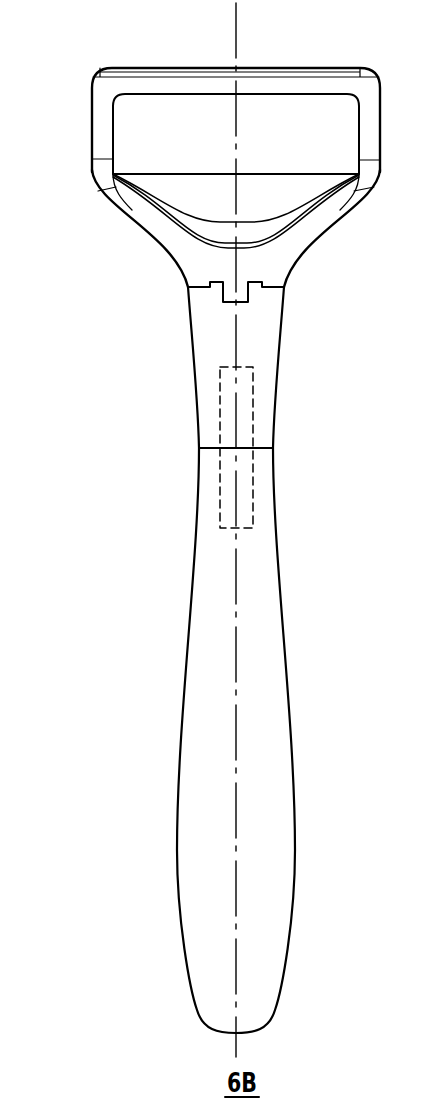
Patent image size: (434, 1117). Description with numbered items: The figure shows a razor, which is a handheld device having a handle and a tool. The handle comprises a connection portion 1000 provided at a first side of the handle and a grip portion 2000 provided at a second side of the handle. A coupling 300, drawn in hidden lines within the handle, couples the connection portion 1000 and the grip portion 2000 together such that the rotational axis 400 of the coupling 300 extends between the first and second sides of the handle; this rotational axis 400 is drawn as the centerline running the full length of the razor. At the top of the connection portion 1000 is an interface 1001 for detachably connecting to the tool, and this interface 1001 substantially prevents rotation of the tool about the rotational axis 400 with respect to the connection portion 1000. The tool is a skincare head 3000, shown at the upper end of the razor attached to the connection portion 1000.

The rotational axis 400 is at (237, 19).
The skincare head 3000 is at (95, 144).
The interface 1001 is at (291, 292).
The connection portion 1000 is at (292, 361).
The coupling 300 is at (220, 421).
The grip portion 2000 is at (299, 742).